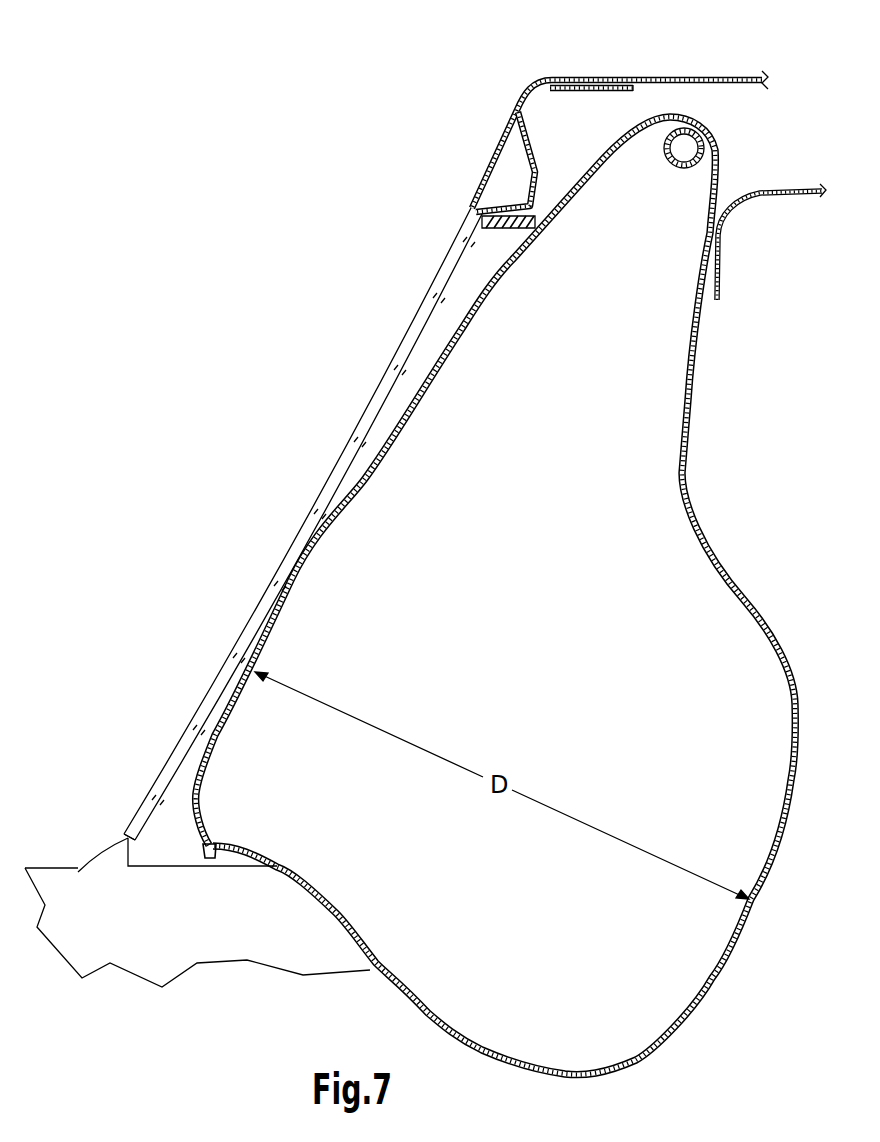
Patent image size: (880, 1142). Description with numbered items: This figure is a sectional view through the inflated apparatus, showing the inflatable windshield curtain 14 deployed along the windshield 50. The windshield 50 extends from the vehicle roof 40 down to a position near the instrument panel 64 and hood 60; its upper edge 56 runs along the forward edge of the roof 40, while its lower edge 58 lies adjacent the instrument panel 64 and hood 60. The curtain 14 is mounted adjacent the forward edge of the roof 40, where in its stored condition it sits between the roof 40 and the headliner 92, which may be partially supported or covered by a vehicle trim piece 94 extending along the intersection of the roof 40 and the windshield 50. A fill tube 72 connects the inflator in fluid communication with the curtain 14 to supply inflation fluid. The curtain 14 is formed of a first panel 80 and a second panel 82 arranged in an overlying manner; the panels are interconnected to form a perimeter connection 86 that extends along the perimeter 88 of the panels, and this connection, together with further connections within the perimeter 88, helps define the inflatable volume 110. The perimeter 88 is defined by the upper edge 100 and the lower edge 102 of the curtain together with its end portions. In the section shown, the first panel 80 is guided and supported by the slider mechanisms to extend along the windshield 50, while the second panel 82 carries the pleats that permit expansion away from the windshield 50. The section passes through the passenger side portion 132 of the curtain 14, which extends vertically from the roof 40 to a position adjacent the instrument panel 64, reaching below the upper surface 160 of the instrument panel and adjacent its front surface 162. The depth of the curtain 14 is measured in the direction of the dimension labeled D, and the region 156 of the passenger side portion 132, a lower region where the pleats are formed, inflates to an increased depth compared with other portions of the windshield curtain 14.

The inflatable windshield curtain 14 is at (687, 473).
The vehicle roof 40 is at (742, 77).
The windshield 50 is at (312, 508).
The upper edge 56 is at (470, 222).
The lower edge 58 is at (125, 828).
The hood 60 is at (78, 872).
The instrument panel 64 is at (277, 888).
The fill tube 72 is at (716, 160).
The first panel 80 is at (432, 383).
The second panel 82 is at (693, 512).
The perimeter connection 86 is at (215, 852).
The perimeter 88 is at (202, 852).
The headliner 92 is at (773, 198).
The vehicle trim piece 94 is at (497, 230).
The upper edge 100 is at (698, 123).
The lower edge 102 is at (222, 858).
The inflatable volume 110 is at (437, 517).
The passenger side portion 132 is at (790, 774).
The region 156 is at (760, 947).
The upper surface 160 is at (249, 862).
The front surface 162 is at (358, 928).